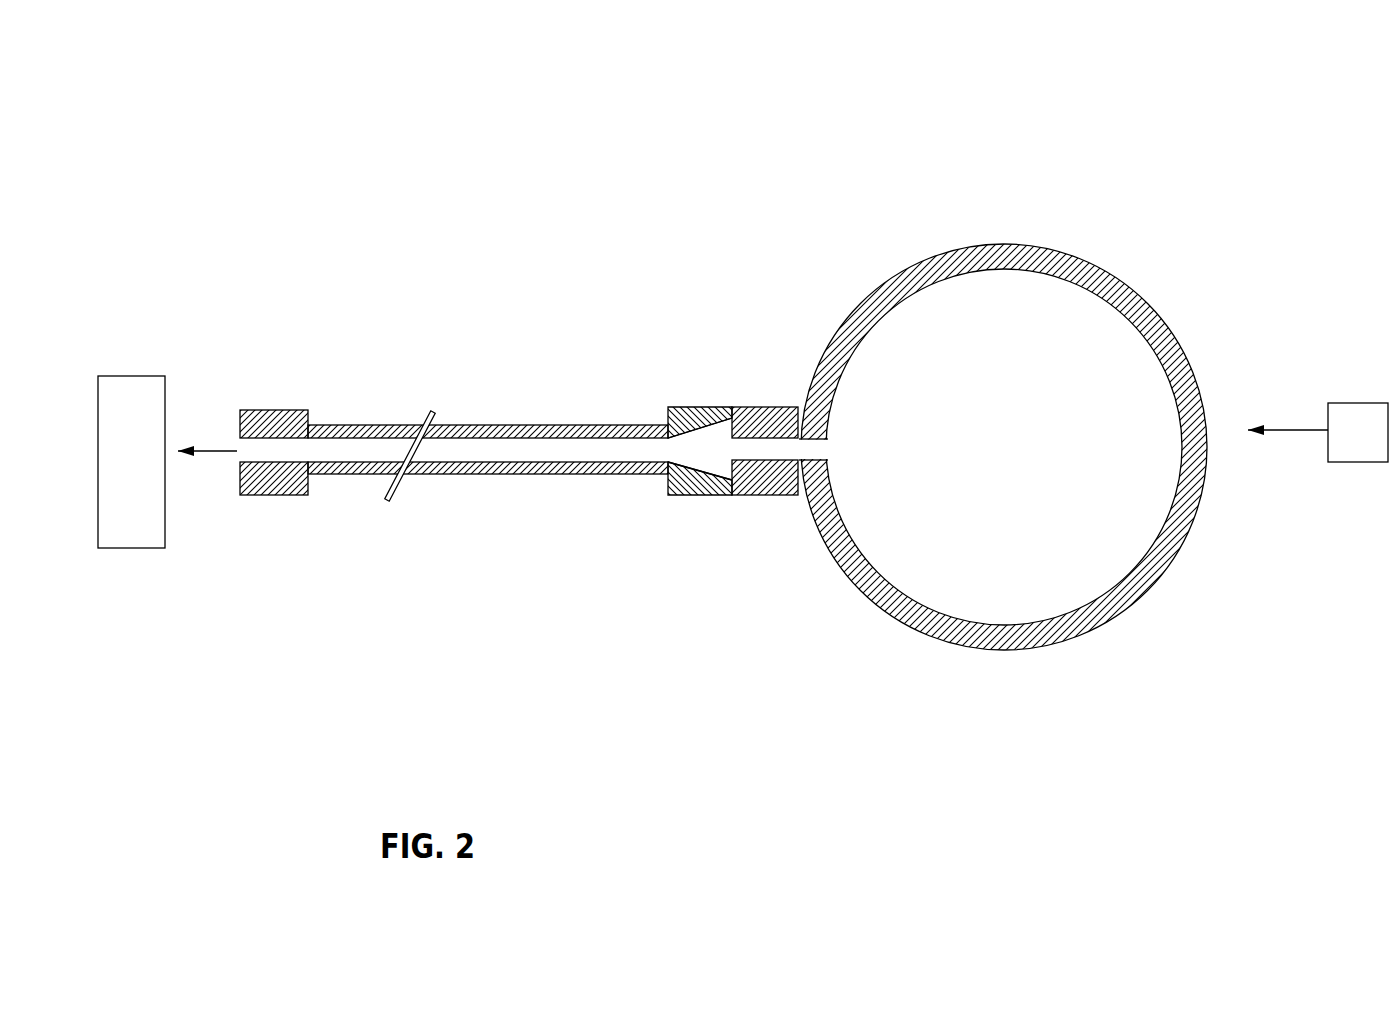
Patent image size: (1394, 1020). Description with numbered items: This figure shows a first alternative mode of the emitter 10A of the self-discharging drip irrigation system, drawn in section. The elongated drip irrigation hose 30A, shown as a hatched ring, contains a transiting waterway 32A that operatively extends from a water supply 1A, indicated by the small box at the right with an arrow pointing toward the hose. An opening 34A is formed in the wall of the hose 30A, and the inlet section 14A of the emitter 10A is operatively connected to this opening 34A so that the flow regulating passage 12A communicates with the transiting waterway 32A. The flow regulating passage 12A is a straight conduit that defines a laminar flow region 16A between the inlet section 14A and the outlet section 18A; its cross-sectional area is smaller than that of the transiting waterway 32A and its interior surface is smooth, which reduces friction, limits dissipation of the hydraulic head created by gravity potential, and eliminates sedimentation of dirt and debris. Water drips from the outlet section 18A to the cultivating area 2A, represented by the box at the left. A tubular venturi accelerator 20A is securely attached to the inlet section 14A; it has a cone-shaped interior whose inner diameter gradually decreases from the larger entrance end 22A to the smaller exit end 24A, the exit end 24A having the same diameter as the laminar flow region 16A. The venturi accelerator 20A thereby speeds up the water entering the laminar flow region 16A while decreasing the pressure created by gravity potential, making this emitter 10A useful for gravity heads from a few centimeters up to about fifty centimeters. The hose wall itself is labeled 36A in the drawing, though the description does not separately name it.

The water supply 1A is at (1358, 437).
The cultivating area 2A is at (125, 477).
The emitter 10A is at (488, 142).
The flow regulating passage 12A is at (481, 522).
The inlet section 14A is at (773, 487).
The laminar flow region 16A is at (558, 450).
The outlet section 18A is at (268, 492).
The venturi accelerator 20A is at (567, 658).
The entrance end 22A is at (728, 447).
The exit end 24A is at (668, 448).
The drip irrigation hose 30A is at (1027, 367).
The transiting waterway 32A is at (1006, 448).
The opening 34A is at (806, 450).
The chamber wall 36A is at (1033, 245).